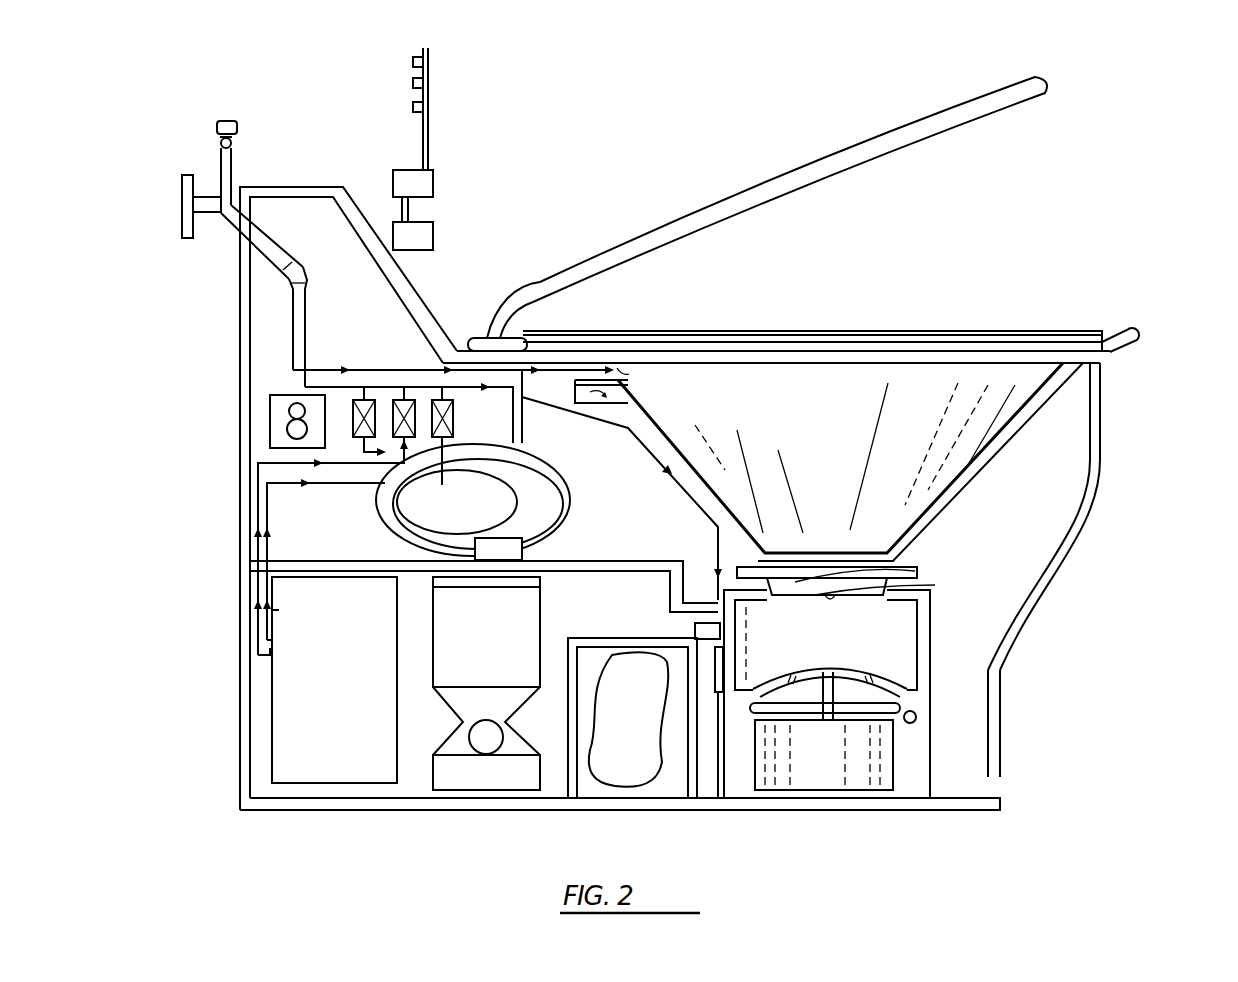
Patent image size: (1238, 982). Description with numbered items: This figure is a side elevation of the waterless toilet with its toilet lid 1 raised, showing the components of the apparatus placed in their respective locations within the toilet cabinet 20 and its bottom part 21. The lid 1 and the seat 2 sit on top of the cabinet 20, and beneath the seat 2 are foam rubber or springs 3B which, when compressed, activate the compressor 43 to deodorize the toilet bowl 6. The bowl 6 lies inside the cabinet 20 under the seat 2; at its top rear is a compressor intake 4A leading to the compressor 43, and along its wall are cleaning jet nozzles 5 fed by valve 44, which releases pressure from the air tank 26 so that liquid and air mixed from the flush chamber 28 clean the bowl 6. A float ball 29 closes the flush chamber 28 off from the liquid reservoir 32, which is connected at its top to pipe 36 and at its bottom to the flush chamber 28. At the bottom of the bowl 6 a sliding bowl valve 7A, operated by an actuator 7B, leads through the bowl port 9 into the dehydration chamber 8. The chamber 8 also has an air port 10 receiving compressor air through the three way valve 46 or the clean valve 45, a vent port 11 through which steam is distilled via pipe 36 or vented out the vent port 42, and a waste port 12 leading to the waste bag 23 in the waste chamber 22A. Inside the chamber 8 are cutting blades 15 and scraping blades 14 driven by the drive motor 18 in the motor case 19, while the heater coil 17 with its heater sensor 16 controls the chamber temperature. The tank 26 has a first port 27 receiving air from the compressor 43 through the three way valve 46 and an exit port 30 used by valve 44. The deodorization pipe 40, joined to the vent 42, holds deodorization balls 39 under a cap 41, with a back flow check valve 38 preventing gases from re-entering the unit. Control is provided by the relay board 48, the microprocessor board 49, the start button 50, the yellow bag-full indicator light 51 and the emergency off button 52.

The toilet lid 1 is at (1030, 96).
The seat 2 is at (1050, 331).
The foam rubber or springs 3B is at (1145, 335).
The compressor intake 4A is at (625, 372).
The cleaning jet nozzles 5 is at (630, 392).
The toilet bowl 6 is at (833, 468).
The sliding bowl valve 7A is at (917, 567).
The actuator 7B is at (920, 573).
The dehydration chamber 8 is at (935, 600).
The bowl port 9 is at (928, 590).
The air port 10 is at (702, 600).
The vent port 11 is at (693, 625).
The waste port 12 is at (713, 650).
The scraping blades 14 is at (918, 633).
The cutting blades 15 is at (885, 672).
The heater sensor 16 is at (918, 717).
The heater coil 17 is at (922, 700).
The drive motor 18 is at (833, 770).
The motor case 19 is at (932, 758).
The toilet cabinet 20 is at (1025, 516).
The bottom part 21 is at (238, 633).
The waste chamber 22A is at (600, 688).
The waste bag 23 is at (640, 760).
The air tank 26 is at (342, 740).
The first port 27 is at (274, 618).
The flush chamber 28 is at (495, 790).
The float ball 29 is at (463, 725).
The exit port 30 is at (270, 660).
The liquid reservoir 32 is at (497, 671).
The pipe 36 is at (570, 480).
The back flow check valve 38 is at (306, 272).
The deodorization balls 39 is at (233, 141).
The deodorization pipe 40 is at (265, 238).
The cap 41 is at (237, 124).
The vent port 42 is at (182, 215).
The compressor 43 is at (268, 433).
The valve 44 is at (353, 400).
The clean valve 45 is at (393, 400).
The three way valve 46 is at (433, 400).
The relay board 48 is at (435, 233).
The microprocessor board 49 is at (435, 183).
The start button 50 is at (413, 108).
The yellow indicator light 51 is at (413, 84).
The emergency off button 52 is at (413, 62).